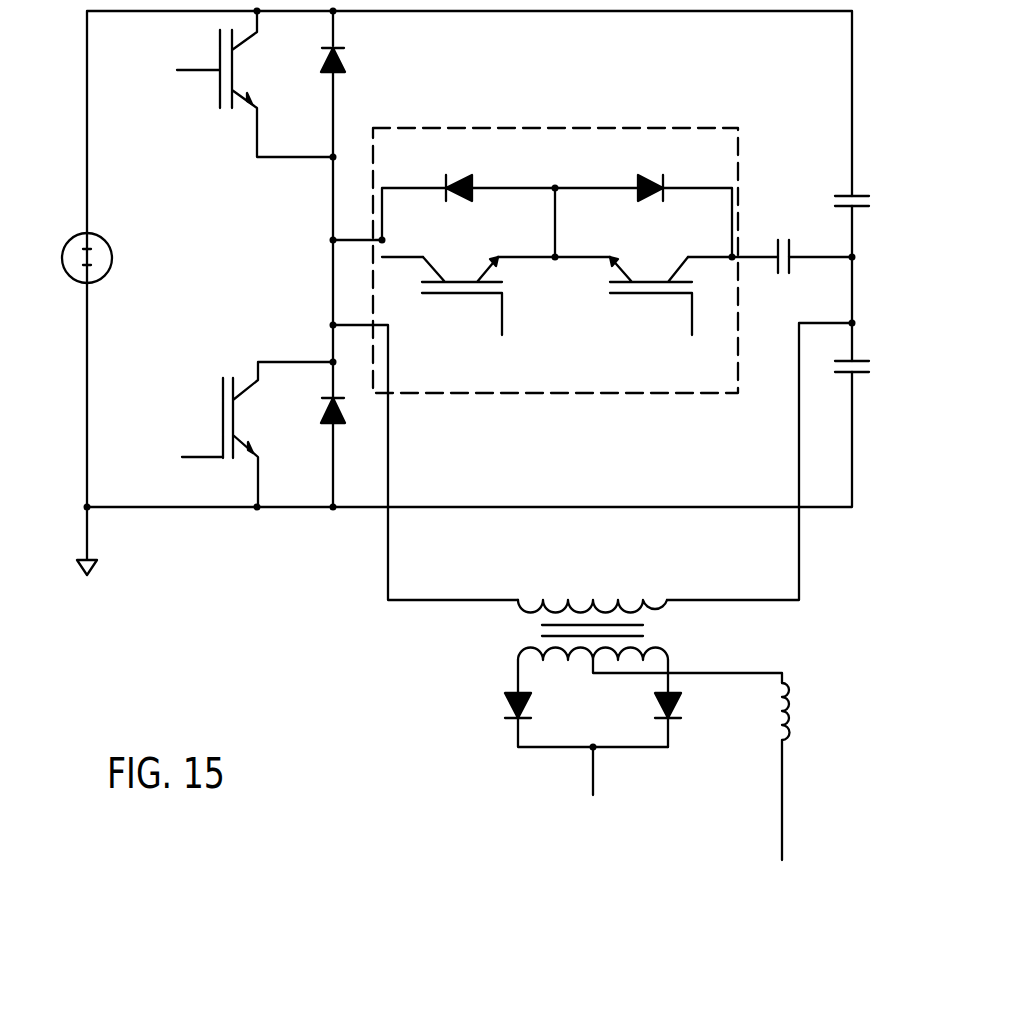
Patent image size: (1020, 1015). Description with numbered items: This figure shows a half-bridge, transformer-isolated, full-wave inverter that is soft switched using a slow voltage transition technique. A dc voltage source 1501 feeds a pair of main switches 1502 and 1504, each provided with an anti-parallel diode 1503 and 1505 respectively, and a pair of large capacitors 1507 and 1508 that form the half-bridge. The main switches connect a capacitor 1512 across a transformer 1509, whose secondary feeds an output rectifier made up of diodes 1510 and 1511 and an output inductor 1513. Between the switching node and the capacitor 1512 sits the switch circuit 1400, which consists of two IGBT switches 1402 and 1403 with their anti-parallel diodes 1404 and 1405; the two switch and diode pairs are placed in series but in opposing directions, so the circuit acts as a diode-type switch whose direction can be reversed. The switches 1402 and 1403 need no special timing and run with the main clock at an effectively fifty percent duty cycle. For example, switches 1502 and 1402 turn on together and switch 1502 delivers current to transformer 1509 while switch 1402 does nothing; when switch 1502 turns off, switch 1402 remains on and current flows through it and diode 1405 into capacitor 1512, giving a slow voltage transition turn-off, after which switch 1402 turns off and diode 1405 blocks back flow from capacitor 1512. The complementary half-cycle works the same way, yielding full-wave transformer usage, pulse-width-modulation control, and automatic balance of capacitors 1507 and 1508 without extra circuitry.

The dc voltage source 1501 is at (67, 241).
The switch 1502 is at (198, 69).
The anti-parallel diode 1503 is at (343, 62).
The switch 1504 is at (222, 400).
The anti-parallel diode 1505 is at (323, 424).
The switch circuit 1400 is at (556, 128).
The switch 1402 is at (502, 315).
The switch 1403 is at (690, 310).
The diode 1404 is at (457, 174).
The diode 1405 is at (639, 174).
The capacitor 1507 is at (845, 192).
The capacitor 1508 is at (857, 376).
The capacitor 1512 is at (778, 246).
The transformer 1509 is at (663, 612).
The diode 1510 is at (531, 702).
The diode 1511 is at (681, 706).
The output inductor 1513 is at (790, 704).